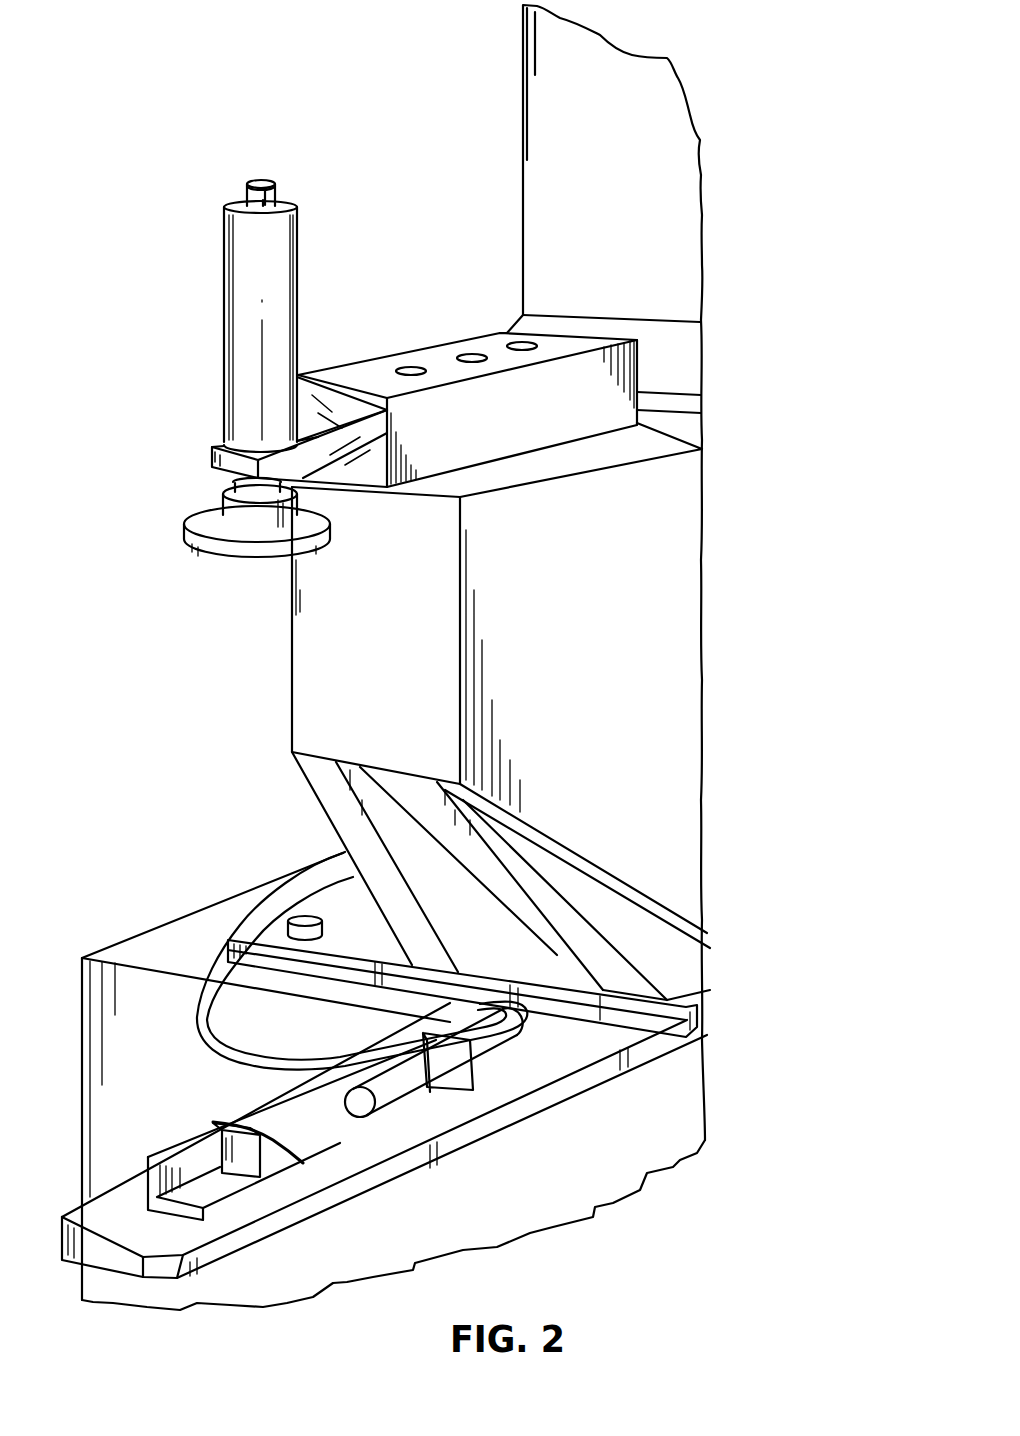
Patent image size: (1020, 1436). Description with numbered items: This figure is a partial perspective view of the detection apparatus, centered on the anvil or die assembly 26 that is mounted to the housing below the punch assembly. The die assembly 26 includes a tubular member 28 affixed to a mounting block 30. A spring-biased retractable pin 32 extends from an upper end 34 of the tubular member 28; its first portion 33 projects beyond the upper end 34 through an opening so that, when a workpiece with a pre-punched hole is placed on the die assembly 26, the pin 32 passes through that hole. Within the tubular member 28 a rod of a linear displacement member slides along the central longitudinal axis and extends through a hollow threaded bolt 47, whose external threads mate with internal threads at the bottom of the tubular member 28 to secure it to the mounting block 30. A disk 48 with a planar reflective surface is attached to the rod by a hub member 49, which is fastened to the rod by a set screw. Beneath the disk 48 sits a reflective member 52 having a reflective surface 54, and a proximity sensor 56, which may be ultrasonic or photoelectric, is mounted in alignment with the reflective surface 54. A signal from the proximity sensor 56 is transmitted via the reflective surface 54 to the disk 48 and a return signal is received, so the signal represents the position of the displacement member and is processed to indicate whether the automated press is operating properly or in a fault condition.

The die assembly 26 is at (184, 304).
The tubular member 28 is at (285, 270).
The mounting block 30 is at (358, 367).
The retractable pin 32 is at (264, 185).
The first portion 33 is at (250, 200).
The upper end 34 is at (290, 200).
The hollow threaded bolt 47 is at (212, 470).
The disk 48 is at (187, 540).
The hub member 49 is at (262, 528).
The reflective member 52 is at (247, 1165).
The reflective surface 54 is at (267, 1150).
The proximity sensor 56 is at (425, 1080).